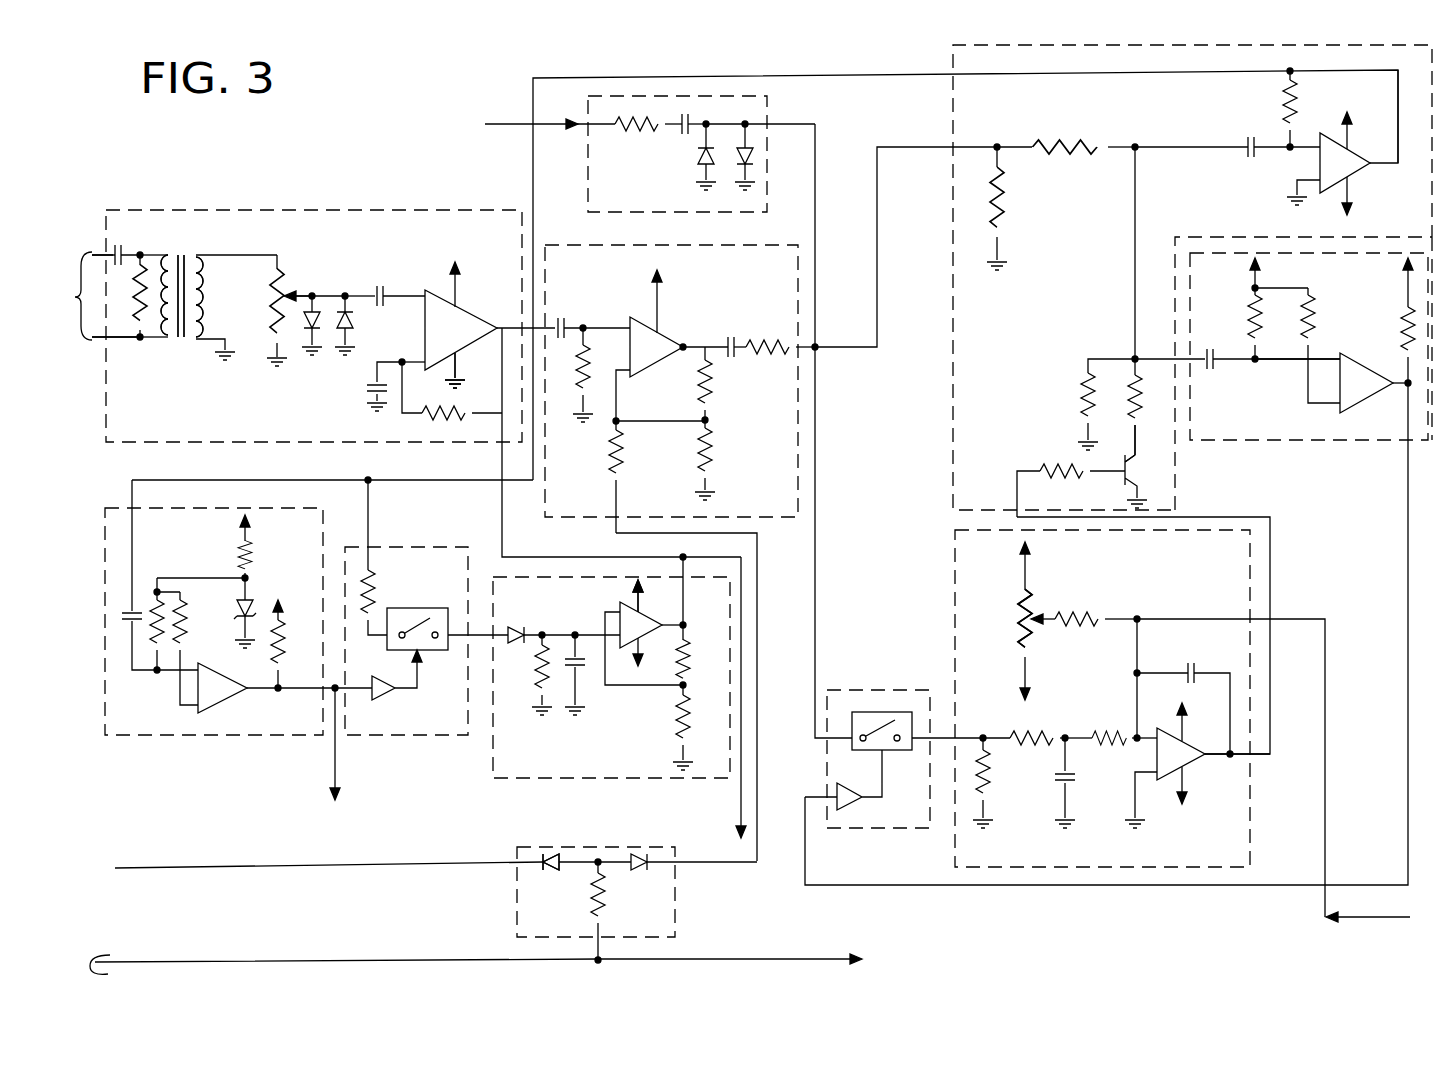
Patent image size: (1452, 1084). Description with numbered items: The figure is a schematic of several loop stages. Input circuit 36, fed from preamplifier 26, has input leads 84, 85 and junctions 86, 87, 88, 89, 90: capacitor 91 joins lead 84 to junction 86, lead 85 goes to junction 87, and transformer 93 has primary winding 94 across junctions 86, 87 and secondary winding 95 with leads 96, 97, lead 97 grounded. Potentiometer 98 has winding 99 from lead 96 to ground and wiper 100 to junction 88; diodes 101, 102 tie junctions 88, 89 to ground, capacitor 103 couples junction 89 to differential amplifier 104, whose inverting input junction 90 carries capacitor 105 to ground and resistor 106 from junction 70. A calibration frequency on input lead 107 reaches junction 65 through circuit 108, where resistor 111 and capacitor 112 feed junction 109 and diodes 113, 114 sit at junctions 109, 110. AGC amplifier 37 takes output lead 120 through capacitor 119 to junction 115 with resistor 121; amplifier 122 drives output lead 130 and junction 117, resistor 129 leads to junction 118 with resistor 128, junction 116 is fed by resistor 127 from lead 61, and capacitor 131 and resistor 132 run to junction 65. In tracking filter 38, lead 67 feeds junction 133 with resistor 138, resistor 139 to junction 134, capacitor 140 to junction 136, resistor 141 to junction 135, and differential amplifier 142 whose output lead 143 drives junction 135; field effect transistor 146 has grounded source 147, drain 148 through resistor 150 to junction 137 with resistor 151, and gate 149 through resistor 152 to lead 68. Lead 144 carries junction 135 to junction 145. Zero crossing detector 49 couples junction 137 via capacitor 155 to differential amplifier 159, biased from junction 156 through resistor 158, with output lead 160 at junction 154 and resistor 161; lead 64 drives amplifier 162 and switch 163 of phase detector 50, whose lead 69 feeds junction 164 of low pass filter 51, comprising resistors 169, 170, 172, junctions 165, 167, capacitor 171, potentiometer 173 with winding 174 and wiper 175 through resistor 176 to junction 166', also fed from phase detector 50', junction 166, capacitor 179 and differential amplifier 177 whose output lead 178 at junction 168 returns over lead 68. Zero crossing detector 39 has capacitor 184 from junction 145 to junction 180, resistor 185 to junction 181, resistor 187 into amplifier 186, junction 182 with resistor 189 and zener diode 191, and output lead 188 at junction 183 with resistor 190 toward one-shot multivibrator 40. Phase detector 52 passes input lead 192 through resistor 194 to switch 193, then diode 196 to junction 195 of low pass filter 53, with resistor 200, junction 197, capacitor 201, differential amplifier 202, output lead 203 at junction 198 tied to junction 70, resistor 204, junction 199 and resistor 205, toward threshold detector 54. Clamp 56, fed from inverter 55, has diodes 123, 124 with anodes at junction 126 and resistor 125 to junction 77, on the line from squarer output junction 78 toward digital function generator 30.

The input circuit 36 is at (298, 207).
The input lead 84 is at (92, 254).
The input lead 85 is at (92, 340).
The junction 86 is at (162, 251).
The junction 87 is at (142, 340).
The capacitor 91 is at (134, 240).
The transformer 93 is at (178, 340).
The primary winding 94 is at (172, 256).
The secondary winding 95 is at (200, 290).
The lead 96 is at (210, 256).
The lead 97 is at (223, 347).
The potentiometer 98 is at (282, 298).
The winding 99 is at (284, 283).
The wiper 100 is at (316, 292).
The junction 88 is at (316, 292).
The junction 89 is at (349, 292).
The diode 101 is at (306, 340).
The diode 102 is at (341, 342).
The capacitor 103 is at (386, 293).
The output lead 120 is at (500, 328).
The differential amplifier 104 is at (468, 350).
The junction 90 is at (403, 360).
The capacitor 105 is at (370, 392).
The resistor 106 is at (440, 415).
The preamplifier 26 is at (261, 232).
The input lead 107 is at (496, 122).
The lead 144 is at (796, 77).
The circuit 108 is at (773, 114).
The resistor 111 is at (639, 128).
The capacitor 112 is at (683, 120).
The junction 109 is at (703, 128).
The junction 110 is at (745, 120).
The diode 113 is at (699, 159).
The diode 114 is at (753, 155).
The AGC amplifier 37 is at (692, 247).
The capacitor 119 is at (557, 323).
The junction 115 is at (584, 326).
The resistor 121 is at (578, 360).
The amplifier 122 is at (661, 367).
The output lead 130 is at (700, 328).
The junction 117 is at (711, 344).
The capacitor 131 is at (736, 341).
The resistor 132 is at (771, 352).
The resistor 129 is at (710, 395).
The junction 118 is at (708, 421).
The junction 116 is at (613, 423).
The resistor 127 is at (622, 455).
The resistor 128 is at (705, 465).
The junction 65 is at (818, 348).
The lead 67 is at (931, 148).
The lead 69 is at (815, 722).
The tracking filter 38 is at (946, 222).
The junction 133 is at (999, 145).
The resistor 139 is at (1065, 145).
The junction 134 is at (1137, 146).
The capacitor 140 is at (1262, 128).
The resistor 141 is at (1283, 94).
The junction 135 is at (1291, 71).
The output lead 143 is at (1396, 91).
The junction 136 is at (1290, 150).
The differential amplifier 142 is at (1359, 171).
The resistor 138 is at (1003, 207).
The junction 137 is at (1133, 357).
The resistor 151 is at (1085, 392).
The resistor 150 is at (1133, 391).
The drain 148 is at (1134, 452).
The source 147 is at (1127, 490).
The gate 149 is at (1100, 468).
The field effect transistor 146 is at (1092, 480).
The resistor 152 is at (1029, 471).
The lead 68 is at (1256, 517).
The lead 64 is at (1407, 511).
The zero crossing detector 49 is at (1259, 451).
The junction 156 is at (1253, 290).
The resistor 158 is at (1310, 311).
The resistor 161 is at (1405, 319).
The capacitor 155 is at (1213, 366).
The differential amplifier 159 is at (1350, 357).
The output lead 160 is at (1397, 378).
The junction 154 is at (1406, 388).
The zero crossing detector 39 is at (108, 737).
The junction 145 is at (366, 477).
The input lead 192 is at (370, 516).
The capacitor 184 is at (126, 632).
The junction 180 is at (158, 673).
The junction 181 is at (155, 590).
The junction 182 is at (248, 576).
The resistor 189 is at (241, 546).
The zener diode 191 is at (251, 600).
The resistor 185 is at (170, 626).
The resistor 187 is at (182, 608).
The resistor 190 is at (279, 640).
The junction 183 is at (280, 688).
The amplifier 186 is at (236, 701).
The output lead 188 is at (265, 668).
The one-shot multivibrator 40 is at (325, 793).
The phase detector 52 is at (400, 736).
The resistor 194 is at (372, 581).
The switch 193 is at (395, 609).
The low pass filter 53 is at (488, 742).
The junction 195 is at (541, 625).
The diode 196 is at (522, 641).
The junction 197 is at (590, 608).
The resistor 200 is at (543, 670).
The capacitor 201 is at (580, 682).
The junction 198 is at (684, 629).
The differential amplifier 202 is at (662, 614).
The output lead 203 is at (680, 630).
The resistor 204 is at (688, 660).
The junction 199 is at (680, 687).
The resistor 205 is at (683, 715).
The junction 70 is at (683, 556).
The threshold detector 54 is at (558, 697).
The lead 61 is at (758, 581).
The phase detector 50 is at (878, 738).
The amplifier 162 is at (862, 770).
The switch 163 is at (898, 752).
The low pass filter 51 is at (948, 566).
The winding 174 is at (1022, 601).
The potentiometer 173 is at (1042, 603).
The wiper 175 is at (1042, 623).
The resistor 176 is at (1082, 617).
The junction 166' is at (1229, 748).
The phase detector 50' is at (1142, 907).
The junction 166 is at (1103, 667).
The capacitor 179 is at (1192, 665).
The junction 164 is at (1000, 713).
The resistor 170 is at (1013, 741).
The junction 165 is at (1066, 735).
The resistor 172 is at (1091, 741).
The junction 167 is at (1135, 735).
The resistor 169 is at (1000, 791).
The capacitor 171 is at (1061, 786).
The output lead 178 is at (1226, 750).
The differential amplifier 177 is at (1161, 788).
The junction 168 is at (1236, 755).
The clamp 56 is at (680, 898).
The inverter 55 is at (329, 879).
The junction 126 is at (559, 867).
The diode 123 is at (550, 871).
The diode 124 is at (651, 867).
The resistor 125 is at (604, 909).
The junction 77 is at (602, 959).
The squarer output junction 78 is at (344, 954).
The digital function generator 30 is at (984, 954).